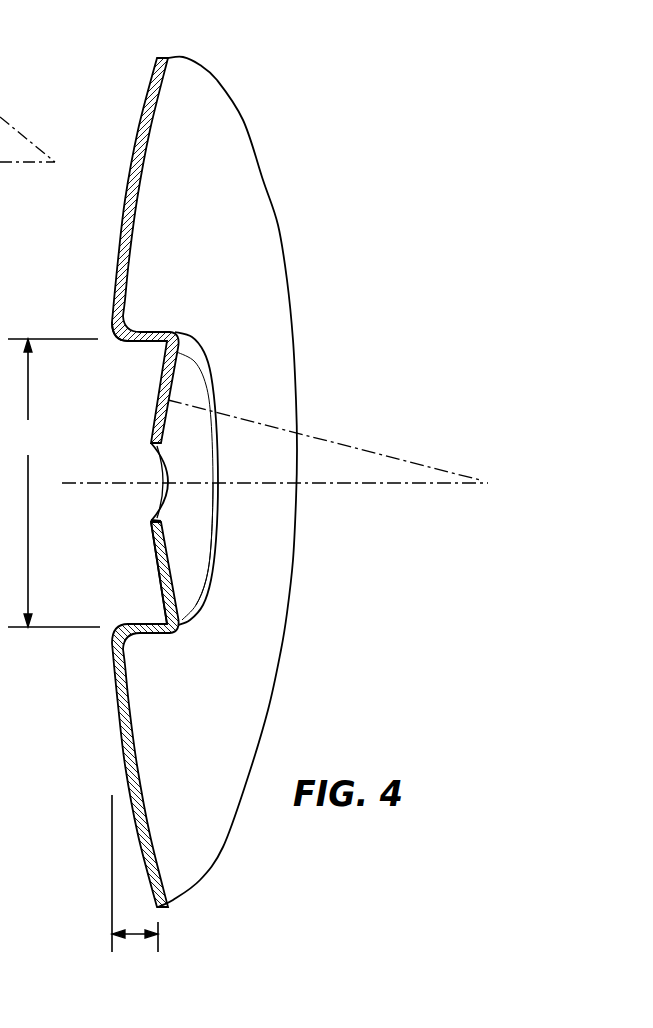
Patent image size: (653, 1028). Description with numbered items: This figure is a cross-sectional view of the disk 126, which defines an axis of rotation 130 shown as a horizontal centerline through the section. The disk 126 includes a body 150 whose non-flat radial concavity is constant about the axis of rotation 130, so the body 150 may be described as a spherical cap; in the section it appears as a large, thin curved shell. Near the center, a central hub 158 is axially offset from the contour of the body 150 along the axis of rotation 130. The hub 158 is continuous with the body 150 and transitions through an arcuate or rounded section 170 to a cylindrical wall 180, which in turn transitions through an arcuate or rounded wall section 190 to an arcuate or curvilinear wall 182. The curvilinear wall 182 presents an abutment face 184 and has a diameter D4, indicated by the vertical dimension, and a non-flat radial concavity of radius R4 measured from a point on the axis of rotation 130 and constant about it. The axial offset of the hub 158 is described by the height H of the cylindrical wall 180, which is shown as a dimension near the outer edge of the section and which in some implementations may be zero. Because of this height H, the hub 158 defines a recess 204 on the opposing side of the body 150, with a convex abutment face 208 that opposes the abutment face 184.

The disk 126 is at (187, 55).
The body 150 is at (212, 128).
The cylindrical wall 180 is at (132, 320).
The rounded wall section 190 is at (197, 343).
The curvilinear wall 182 is at (187, 377).
The abutment face 184 is at (190, 574).
The rounded section 170 is at (123, 344).
The recess 204 is at (143, 462).
The convex abutment face 208 is at (150, 552).
The central hub 158 is at (120, 732).
The axis of rotation 130 is at (325, 485).
The radius R4 is at (317, 433).
The diameter D4 is at (54, 483).
The height H is at (137, 938).